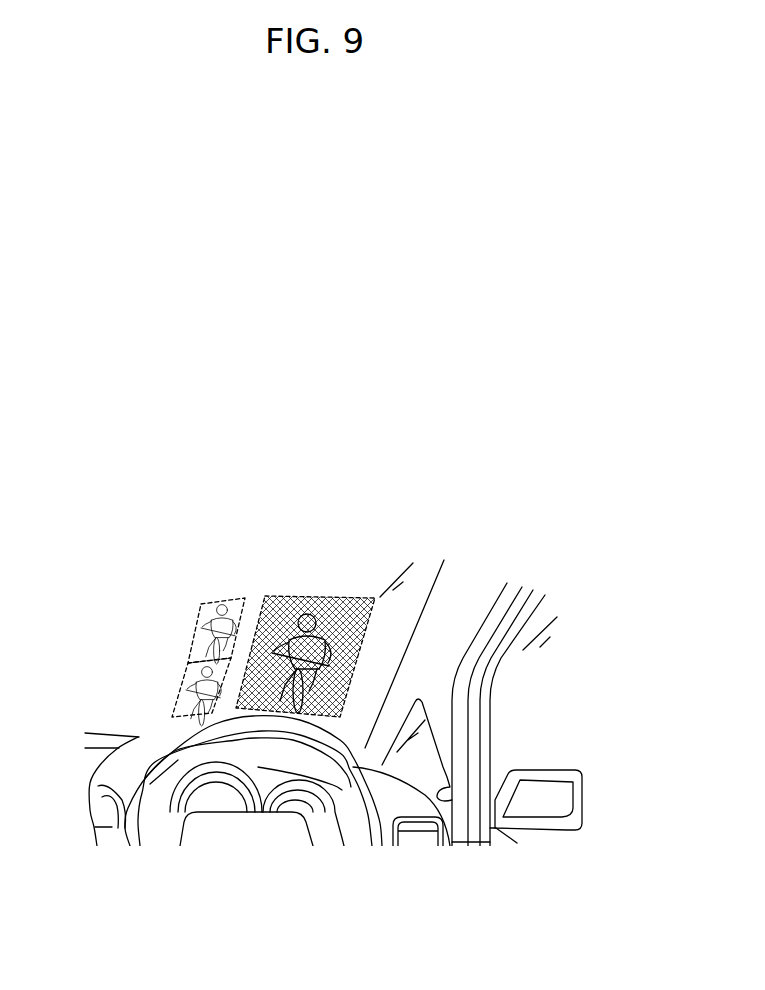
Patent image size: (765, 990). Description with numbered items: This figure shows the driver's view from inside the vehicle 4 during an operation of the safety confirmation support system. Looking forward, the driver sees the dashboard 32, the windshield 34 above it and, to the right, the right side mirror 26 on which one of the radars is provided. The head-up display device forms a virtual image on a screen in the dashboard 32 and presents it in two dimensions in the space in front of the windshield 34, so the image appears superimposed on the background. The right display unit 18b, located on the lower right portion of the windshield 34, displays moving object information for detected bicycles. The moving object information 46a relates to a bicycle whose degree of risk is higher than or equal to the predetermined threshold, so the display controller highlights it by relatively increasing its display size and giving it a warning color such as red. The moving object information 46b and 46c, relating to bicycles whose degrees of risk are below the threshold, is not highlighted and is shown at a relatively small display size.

The vehicle 4 is at (237, 593).
The right display unit 18b is at (281, 593).
The right side mirror 26 is at (588, 792).
The dashboard 32 is at (102, 760).
The windshield 34 is at (405, 613).
The moving object information 46a is at (323, 610).
The moving object information 46b is at (211, 607).
The moving object information 46c is at (184, 694).